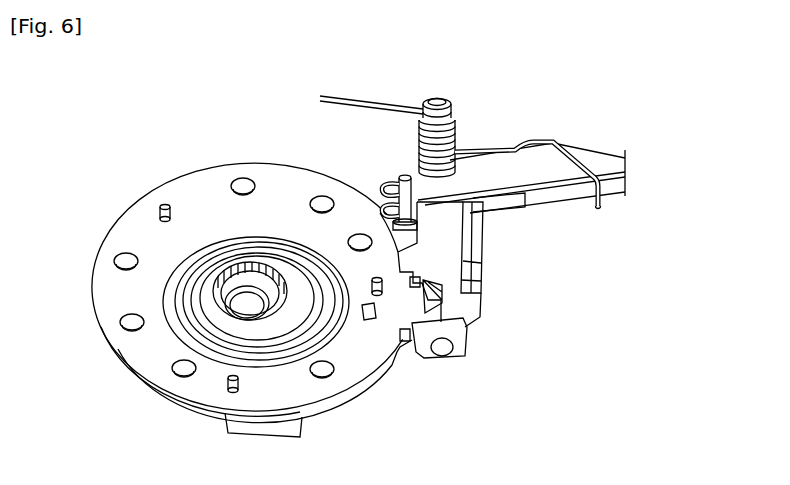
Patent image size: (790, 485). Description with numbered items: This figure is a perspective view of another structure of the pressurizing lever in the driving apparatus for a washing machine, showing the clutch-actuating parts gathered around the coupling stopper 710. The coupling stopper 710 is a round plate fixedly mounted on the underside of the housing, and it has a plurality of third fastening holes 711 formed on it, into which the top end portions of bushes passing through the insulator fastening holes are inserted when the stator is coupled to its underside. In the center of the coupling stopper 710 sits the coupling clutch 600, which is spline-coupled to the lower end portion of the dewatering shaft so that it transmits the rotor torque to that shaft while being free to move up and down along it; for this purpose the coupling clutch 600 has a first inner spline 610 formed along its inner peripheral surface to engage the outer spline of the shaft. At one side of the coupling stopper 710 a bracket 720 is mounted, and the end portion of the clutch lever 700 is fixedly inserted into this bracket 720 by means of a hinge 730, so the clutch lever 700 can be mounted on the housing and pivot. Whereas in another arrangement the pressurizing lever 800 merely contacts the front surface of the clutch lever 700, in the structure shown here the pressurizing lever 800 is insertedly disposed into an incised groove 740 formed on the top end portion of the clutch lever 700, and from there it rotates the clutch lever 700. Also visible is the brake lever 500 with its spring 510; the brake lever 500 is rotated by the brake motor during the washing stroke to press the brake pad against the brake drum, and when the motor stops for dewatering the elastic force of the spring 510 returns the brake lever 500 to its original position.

The brake lever 500 is at (537, 172).
The spring 510 is at (453, 130).
The coupling clutch 600 is at (187, 260).
The first inner spline 610 is at (222, 285).
The clutch lever 700 is at (384, 378).
The coupling stopper 710 is at (198, 180).
The third fastening holes 711 is at (245, 182).
The bracket 720 is at (418, 358).
The hinge 730 is at (443, 356).
The incised groove 740 is at (470, 298).
The pressurizing lever 800 is at (472, 237).